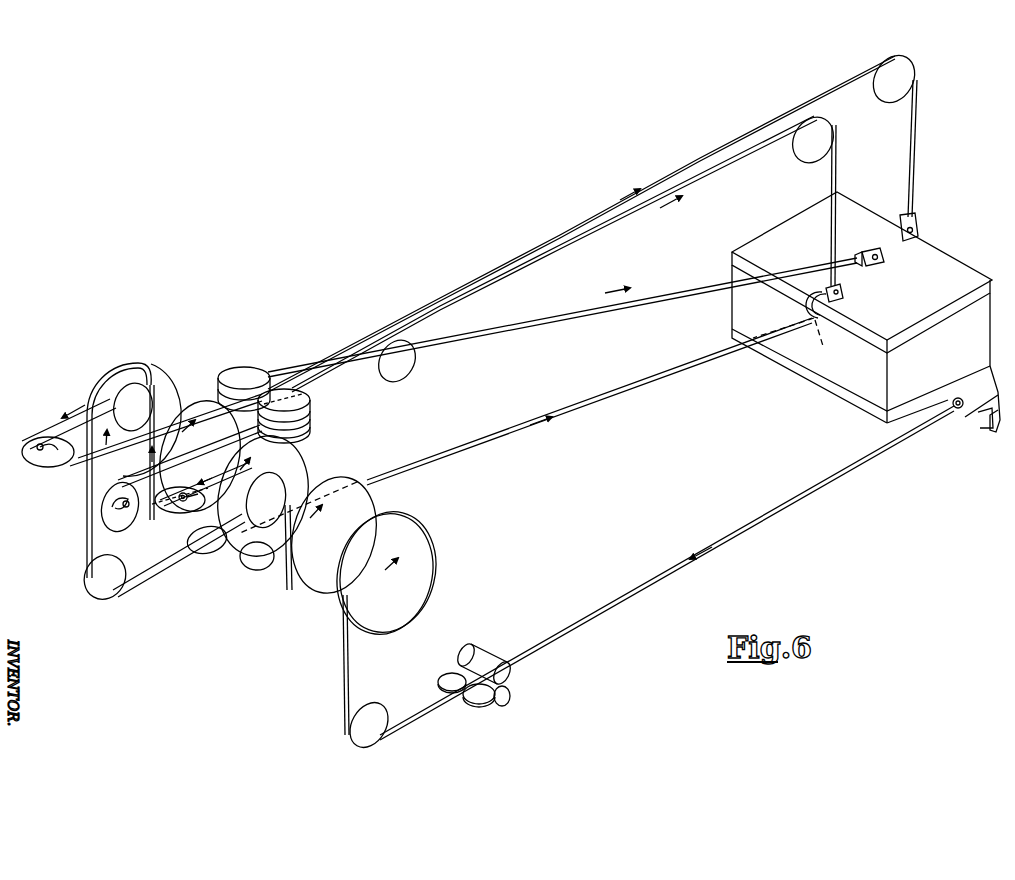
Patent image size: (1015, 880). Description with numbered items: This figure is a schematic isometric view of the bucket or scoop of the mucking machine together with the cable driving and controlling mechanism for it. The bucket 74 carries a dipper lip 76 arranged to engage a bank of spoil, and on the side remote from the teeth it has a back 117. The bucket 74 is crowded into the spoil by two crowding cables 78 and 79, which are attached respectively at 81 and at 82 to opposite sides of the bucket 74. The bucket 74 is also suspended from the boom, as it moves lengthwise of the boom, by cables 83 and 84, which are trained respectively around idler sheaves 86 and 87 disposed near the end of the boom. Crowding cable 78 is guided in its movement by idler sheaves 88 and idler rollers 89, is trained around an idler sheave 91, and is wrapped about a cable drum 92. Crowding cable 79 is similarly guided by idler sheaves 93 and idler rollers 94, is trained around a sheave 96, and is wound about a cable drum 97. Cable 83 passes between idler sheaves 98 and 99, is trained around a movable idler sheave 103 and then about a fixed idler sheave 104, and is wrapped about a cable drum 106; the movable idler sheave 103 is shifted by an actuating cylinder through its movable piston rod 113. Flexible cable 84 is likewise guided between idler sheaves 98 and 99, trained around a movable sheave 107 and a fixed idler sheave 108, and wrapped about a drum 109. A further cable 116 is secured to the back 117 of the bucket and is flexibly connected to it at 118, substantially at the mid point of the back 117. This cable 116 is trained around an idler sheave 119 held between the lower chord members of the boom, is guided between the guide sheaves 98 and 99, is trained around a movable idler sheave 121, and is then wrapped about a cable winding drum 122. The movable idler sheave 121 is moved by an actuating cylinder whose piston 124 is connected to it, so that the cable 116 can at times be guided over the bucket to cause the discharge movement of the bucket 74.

The bucket 74 is at (922, 282).
The dipper lip 76 is at (990, 420).
The crowding cable 78 is at (760, 520).
The crowding cable 79 is at (585, 401).
The attachment point 81 is at (956, 410).
The attachment point 82 is at (798, 325).
The cable 83 is at (835, 186).
The flexible cable 84 is at (914, 112).
The idler sheave 86 is at (803, 155).
The idler sheave 87 is at (893, 94).
The idler sheaves 88 is at (476, 700).
The idler rollers 89 is at (508, 696).
The idler sheave 91 is at (375, 705).
The cable drum 92 is at (435, 560).
The idler sheaves 93 is at (215, 556).
The idler rollers 94 is at (258, 571).
The sheave 96 is at (103, 585).
The cable drum 97 is at (172, 388).
The idler sheaves 98 is at (258, 370).
The idler sheaves 99 is at (311, 398).
The movable idler sheave 103 is at (172, 508).
The fixed idler sheave 104 is at (290, 483).
The cable drum 106 is at (334, 579).
The movable sheave 107 is at (40, 462).
The fixed idler sheave 108 is at (143, 383).
The drum 109 is at (198, 400).
The piston rod 113 is at (185, 505).
The cable 116 is at (668, 292).
The back 117 is at (853, 216).
The connection point 118 is at (875, 254).
The idler sheave 119 is at (416, 368).
The movable idler sheave 121 is at (103, 512).
The cable winding drum 122 is at (292, 458).
The piston 124 is at (128, 512).